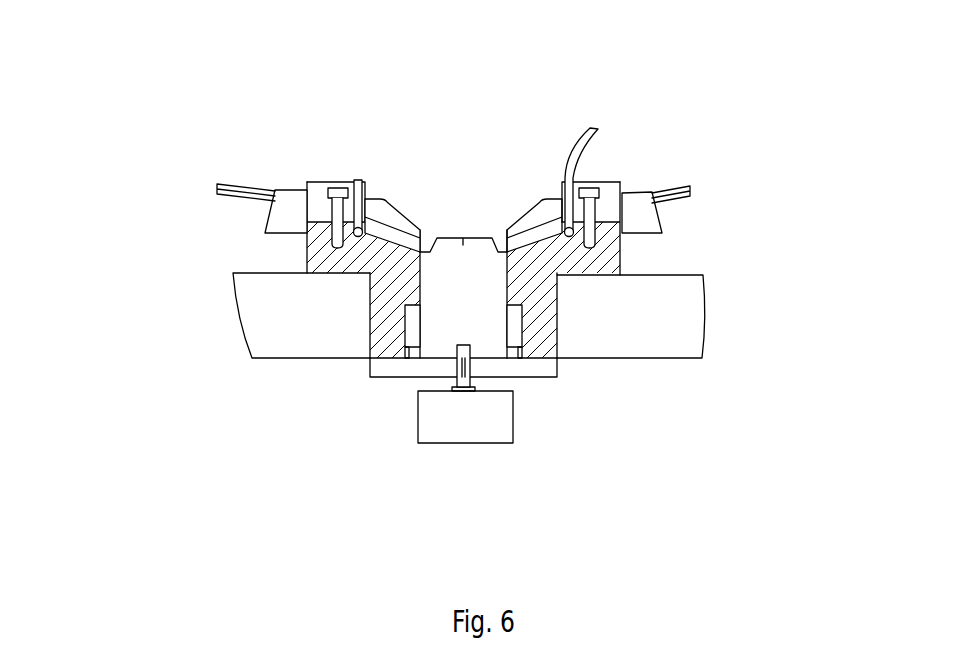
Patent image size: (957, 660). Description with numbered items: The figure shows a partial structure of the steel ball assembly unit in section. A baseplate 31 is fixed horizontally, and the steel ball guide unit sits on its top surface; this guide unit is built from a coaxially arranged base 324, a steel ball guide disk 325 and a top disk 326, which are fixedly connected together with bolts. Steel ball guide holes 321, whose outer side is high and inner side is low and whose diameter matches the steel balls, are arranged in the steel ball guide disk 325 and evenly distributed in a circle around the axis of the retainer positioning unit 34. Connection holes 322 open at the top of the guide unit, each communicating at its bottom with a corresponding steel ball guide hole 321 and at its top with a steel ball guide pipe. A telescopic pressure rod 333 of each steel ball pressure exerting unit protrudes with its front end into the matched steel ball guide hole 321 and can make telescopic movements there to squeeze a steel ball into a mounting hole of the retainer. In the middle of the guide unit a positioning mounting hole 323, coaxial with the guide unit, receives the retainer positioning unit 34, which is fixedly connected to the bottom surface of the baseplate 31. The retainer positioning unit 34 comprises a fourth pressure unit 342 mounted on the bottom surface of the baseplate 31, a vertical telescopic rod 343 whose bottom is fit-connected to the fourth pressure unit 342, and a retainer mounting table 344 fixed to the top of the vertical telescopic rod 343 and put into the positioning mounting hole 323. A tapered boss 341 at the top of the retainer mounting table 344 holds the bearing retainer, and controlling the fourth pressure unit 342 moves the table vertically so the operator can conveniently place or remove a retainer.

The baseplate 31 is at (305, 323).
The steel ball guide hole 321 is at (367, 263).
The connection hole 322 is at (332, 188).
The positioning mounting hole 323 is at (413, 327).
The base 324 is at (543, 322).
The steel ball guide disk 325 is at (608, 218).
The top disk 326 is at (613, 196).
The telescopic pressure rod 333 is at (245, 190).
The tapered boss 341 is at (437, 238).
The fourth pressure unit 342 is at (465, 430).
The vertical telescopic rod 343 is at (462, 352).
The retainer mounting table 344 is at (480, 313).
The retainer positioning unit 34 is at (509, 451).